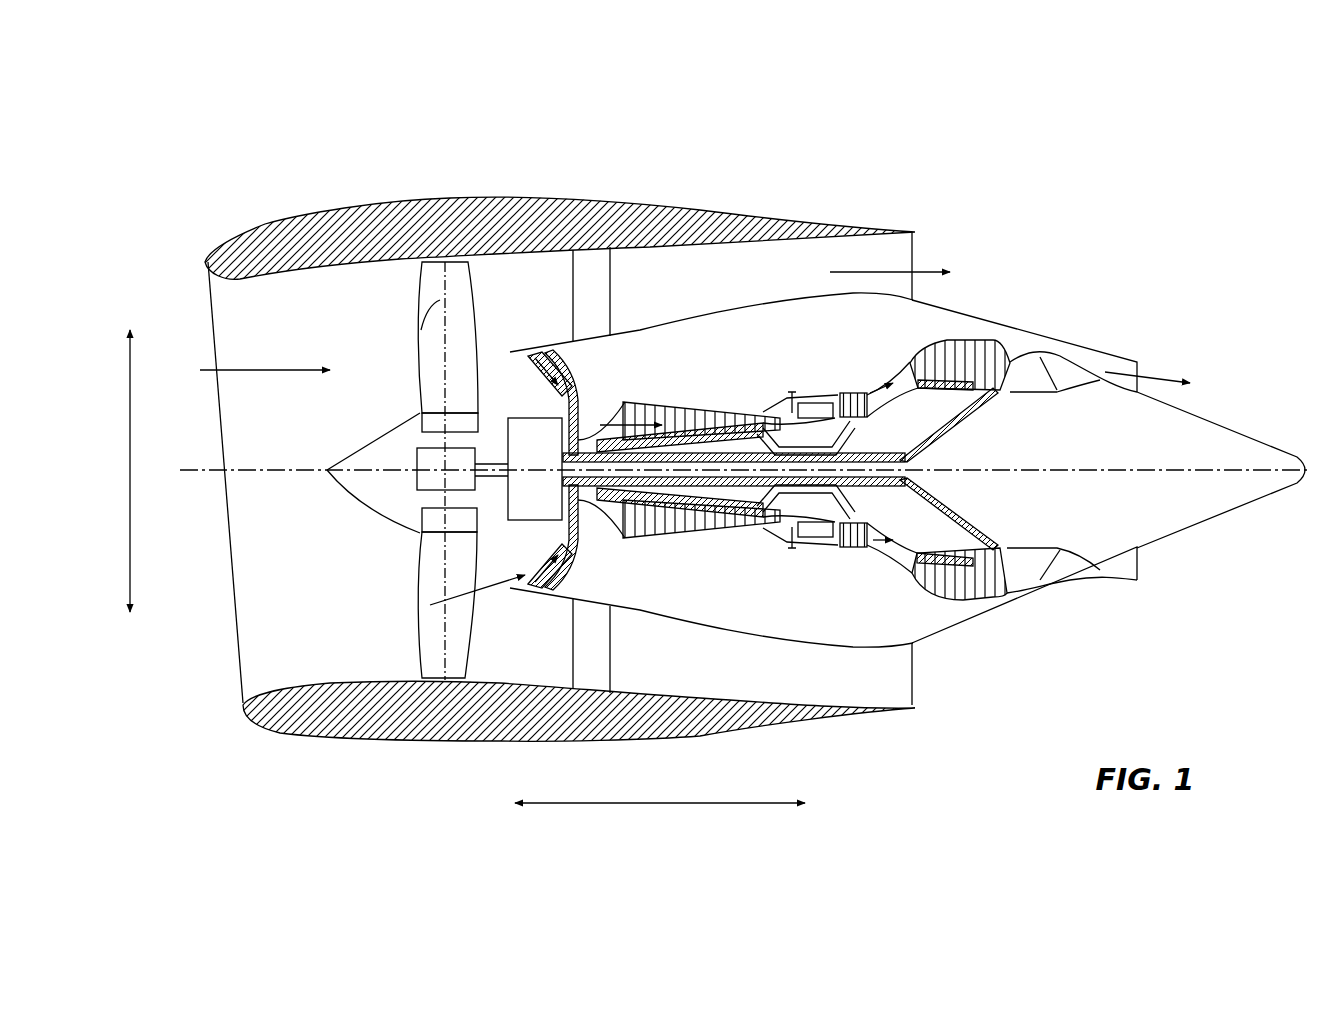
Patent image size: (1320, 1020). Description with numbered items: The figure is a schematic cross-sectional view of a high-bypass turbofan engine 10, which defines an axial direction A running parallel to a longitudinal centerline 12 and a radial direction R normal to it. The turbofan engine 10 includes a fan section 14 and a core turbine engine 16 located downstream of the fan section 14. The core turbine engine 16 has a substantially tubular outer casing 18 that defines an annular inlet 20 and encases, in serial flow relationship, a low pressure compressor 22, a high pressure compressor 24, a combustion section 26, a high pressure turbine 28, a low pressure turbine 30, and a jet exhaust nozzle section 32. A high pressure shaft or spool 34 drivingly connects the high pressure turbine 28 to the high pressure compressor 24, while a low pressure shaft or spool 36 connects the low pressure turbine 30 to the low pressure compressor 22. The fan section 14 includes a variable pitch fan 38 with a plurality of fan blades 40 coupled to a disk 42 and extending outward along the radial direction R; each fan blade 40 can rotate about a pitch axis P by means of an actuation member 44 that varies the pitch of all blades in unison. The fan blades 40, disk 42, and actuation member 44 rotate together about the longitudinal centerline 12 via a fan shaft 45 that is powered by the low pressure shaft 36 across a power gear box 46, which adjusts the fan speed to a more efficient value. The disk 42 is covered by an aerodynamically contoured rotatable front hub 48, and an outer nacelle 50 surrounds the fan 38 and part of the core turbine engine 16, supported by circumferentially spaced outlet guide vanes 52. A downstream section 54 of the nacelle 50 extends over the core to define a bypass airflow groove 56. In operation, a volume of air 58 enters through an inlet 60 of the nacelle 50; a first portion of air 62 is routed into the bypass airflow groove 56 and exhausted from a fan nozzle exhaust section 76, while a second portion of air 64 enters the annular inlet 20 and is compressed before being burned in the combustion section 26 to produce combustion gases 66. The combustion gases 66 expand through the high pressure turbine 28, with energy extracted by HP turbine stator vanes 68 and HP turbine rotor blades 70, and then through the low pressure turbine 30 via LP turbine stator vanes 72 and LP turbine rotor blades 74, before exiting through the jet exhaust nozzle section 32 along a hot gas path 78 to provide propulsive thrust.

The turbofan engine 10 is at (1055, 212).
The longitudinal centerline 12 is at (1080, 467).
The fan section 14 is at (378, 285).
The core turbine engine 16 is at (730, 355).
The outer casing 18 is at (767, 637).
The annular inlet 20 is at (515, 577).
The low pressure compressor 22 is at (563, 530).
The high pressure compressor 24 is at (640, 525).
The combustion section 26 is at (805, 550).
The high pressure turbine 28 is at (870, 532).
The low pressure turbine 30 is at (993, 598).
The jet exhaust nozzle section 32 is at (1053, 578).
The high pressure shaft or spool 34 is at (838, 445).
The low pressure shaft or spool 36 is at (940, 432).
The variable pitch fan 38 is at (382, 525).
The fan blades 40 is at (418, 622).
The disk 42 is at (438, 425).
The actuation member 44 is at (417, 450).
The fan shaft 45 is at (488, 457).
The power gear box 46 is at (598, 410).
The front hub 48 is at (328, 473).
The outer nacelle 50 is at (470, 745).
The outlet guide vanes 52 is at (610, 286).
The downstream section of the nacelle 54 is at (853, 222).
The bypass airflow groove 56 is at (758, 292).
The volume of air 58 is at (260, 370).
The inlet 60 is at (243, 685).
The first portion of air 62 is at (420, 323).
The second portion of air 64 is at (494, 366).
The combustion gases 66 is at (850, 395).
The HP turbine stator vanes 68 is at (830, 547).
The HP turbine rotor blades 70 is at (850, 522).
The LP turbine stator vanes 72 is at (920, 580).
The LP turbine rotor blades 74 is at (933, 597).
The fan nozzle exhaust section 76 is at (903, 258).
The hot gas path 78 is at (893, 375).
The pitch axis P is at (452, 272).
The radial direction R is at (129, 471).
The axial direction A is at (660, 803).